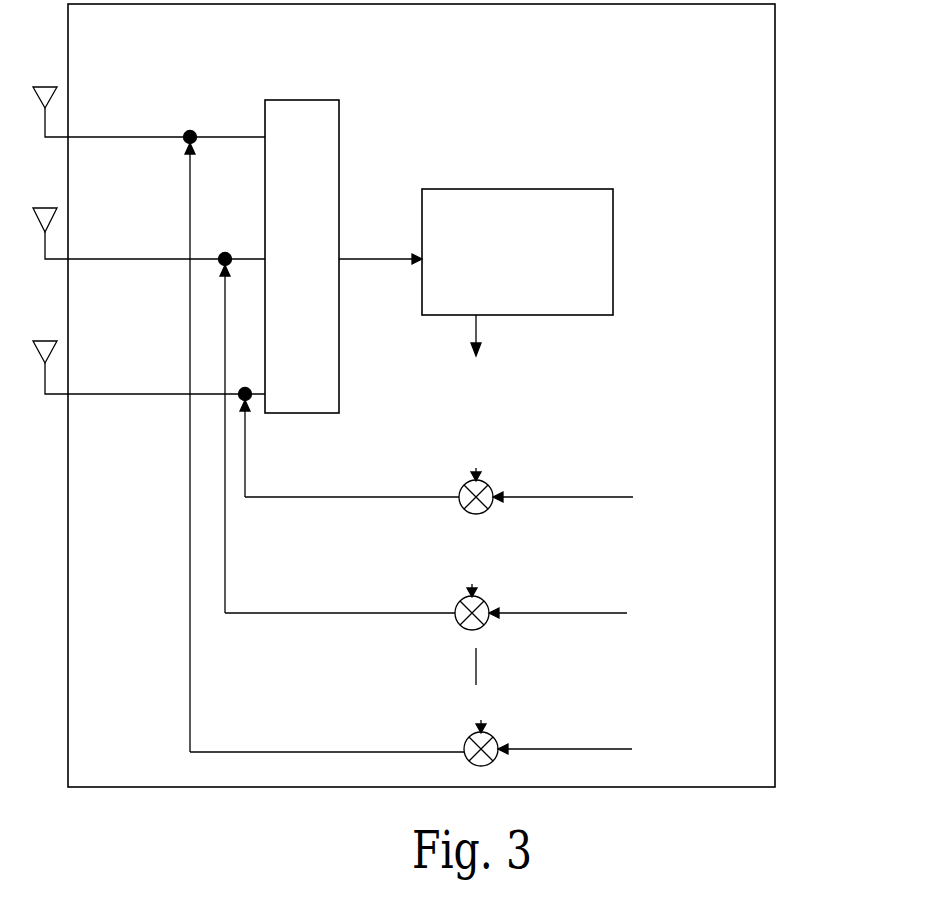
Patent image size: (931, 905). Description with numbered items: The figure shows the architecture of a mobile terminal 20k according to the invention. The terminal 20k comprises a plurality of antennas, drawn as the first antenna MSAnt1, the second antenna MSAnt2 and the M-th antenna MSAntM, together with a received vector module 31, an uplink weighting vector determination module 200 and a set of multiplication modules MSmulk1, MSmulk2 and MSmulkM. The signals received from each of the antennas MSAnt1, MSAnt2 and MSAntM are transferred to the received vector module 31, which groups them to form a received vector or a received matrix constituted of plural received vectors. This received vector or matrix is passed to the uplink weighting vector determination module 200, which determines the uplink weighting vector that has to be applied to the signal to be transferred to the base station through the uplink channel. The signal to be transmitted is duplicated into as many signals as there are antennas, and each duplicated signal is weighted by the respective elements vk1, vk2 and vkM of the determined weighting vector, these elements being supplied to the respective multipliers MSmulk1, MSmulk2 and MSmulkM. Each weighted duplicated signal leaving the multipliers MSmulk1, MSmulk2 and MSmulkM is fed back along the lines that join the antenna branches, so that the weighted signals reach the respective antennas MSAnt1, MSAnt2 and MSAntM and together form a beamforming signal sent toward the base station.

The mobile terminal 20k is at (775, 89).
The received vector module 31 is at (323, 103).
The uplink weighting vector determination module 200 is at (555, 190).
The first antenna MSAnt1 is at (58, 90).
The second antenna MSAnt2 is at (62, 214).
The M-th antenna MSAntM is at (58, 342).
The first multiplier MSmulk1 is at (493, 490).
The second multiplier MSmulk2 is at (490, 606).
The M-th multiplier MSmulkM is at (499, 742).
The first weighting vector element vk1 is at (479, 461).
The second weighting vector element vk2 is at (475, 576).
The M-th weighting vector element vkM is at (483, 712).